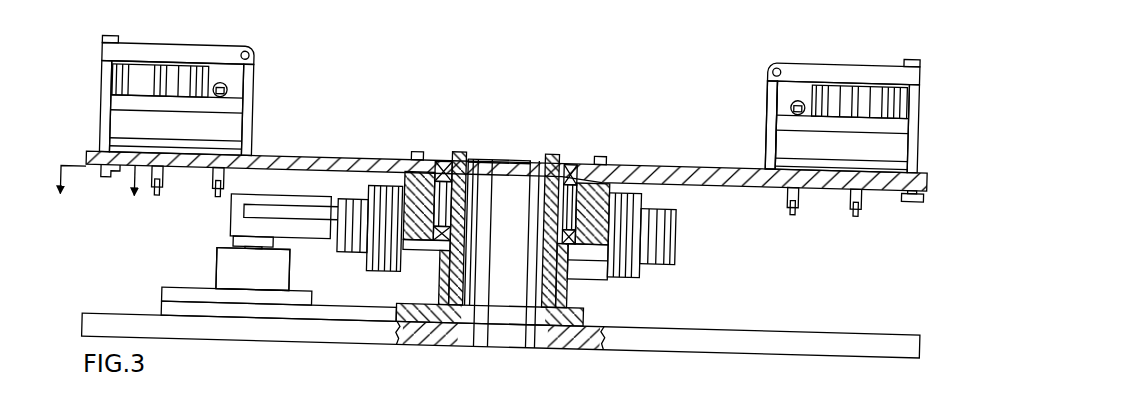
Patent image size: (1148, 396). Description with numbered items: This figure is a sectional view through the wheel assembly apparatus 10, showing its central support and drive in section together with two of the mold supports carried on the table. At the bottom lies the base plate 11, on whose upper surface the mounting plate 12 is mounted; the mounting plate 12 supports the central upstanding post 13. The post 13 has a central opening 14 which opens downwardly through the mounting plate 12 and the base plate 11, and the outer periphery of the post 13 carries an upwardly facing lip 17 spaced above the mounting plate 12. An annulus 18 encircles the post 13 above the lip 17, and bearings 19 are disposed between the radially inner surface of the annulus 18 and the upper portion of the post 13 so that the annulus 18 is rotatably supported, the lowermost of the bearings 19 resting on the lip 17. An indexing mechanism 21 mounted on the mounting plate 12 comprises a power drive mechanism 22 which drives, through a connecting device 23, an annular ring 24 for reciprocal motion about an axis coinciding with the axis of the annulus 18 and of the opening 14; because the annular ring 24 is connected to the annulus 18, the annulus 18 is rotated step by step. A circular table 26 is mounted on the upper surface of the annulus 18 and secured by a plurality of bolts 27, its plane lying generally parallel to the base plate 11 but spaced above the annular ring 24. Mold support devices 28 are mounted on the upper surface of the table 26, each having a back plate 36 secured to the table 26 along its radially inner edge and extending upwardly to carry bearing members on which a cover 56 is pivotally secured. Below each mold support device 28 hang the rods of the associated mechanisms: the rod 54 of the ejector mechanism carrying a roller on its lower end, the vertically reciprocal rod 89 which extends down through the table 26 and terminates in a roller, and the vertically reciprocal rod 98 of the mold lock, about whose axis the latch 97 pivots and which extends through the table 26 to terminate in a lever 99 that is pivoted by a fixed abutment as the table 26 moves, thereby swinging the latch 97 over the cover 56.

The wheel assembly apparatus 10 is at (455, 86).
The base plate 11 is at (830, 327).
The mounting plate 12 is at (587, 316).
The upstanding post 13 is at (568, 288).
The central opening 14 is at (537, 164).
The upwardly facing lip 17 is at (563, 231).
The annulus 18 is at (617, 166).
The bearings 19 is at (572, 160).
The indexing mechanism 21 is at (220, 245).
The power drive mechanism 22 is at (227, 272).
The connecting device 23 is at (312, 243).
The annular ring 24 is at (372, 244).
The table 26 is at (691, 162).
The bolts 27 is at (595, 153).
The mold support devices 28 is at (170, 45).
The back plate 36 is at (767, 105).
The rod 54 is at (160, 190).
The cover 56 is at (232, 46).
The vertically reciprocal rod 89 is at (214, 193).
The latch 97 is at (103, 50).
The vertically reciprocal rod 98 is at (102, 190).
The lever 99 is at (912, 191).